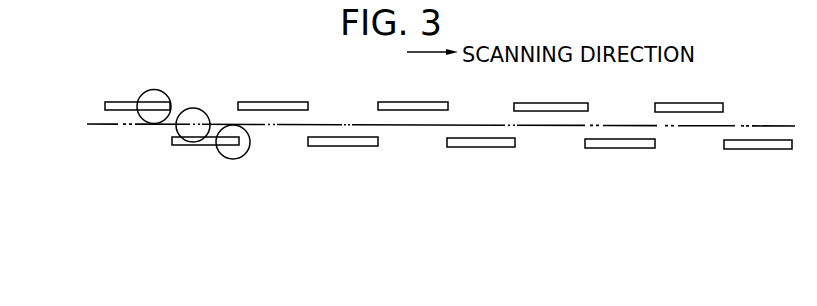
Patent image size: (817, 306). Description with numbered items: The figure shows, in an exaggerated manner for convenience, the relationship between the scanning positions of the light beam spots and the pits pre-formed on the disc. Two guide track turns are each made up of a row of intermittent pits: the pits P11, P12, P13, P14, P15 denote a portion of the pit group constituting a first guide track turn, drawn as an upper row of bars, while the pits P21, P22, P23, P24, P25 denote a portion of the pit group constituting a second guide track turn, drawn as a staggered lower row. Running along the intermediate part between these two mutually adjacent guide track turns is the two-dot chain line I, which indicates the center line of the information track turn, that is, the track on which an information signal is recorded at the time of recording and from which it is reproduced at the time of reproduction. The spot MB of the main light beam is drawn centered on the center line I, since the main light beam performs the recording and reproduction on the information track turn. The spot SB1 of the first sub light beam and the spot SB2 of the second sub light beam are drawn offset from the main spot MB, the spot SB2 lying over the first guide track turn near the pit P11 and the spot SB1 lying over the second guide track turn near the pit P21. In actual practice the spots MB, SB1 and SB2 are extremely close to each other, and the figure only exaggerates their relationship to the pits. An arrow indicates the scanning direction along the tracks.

The pit P11 is at (103, 101).
The pit P12 is at (280, 102).
The pit P13 is at (418, 102).
The pit P14 is at (553, 103).
The pit P15 is at (693, 103).
The pit P21 is at (180, 146).
The pit P22 is at (358, 147).
The pit P23 is at (487, 148).
The pit P24 is at (624, 149).
The pit P25 is at (762, 150).
The spot of first sub light beam SB1 is at (242, 158).
The spot of second sub light beam SB2 is at (158, 89).
The spot of main light beam MB is at (195, 108).
The center line of information track turn I is at (631, 124).